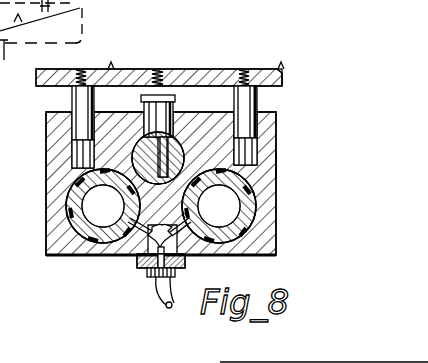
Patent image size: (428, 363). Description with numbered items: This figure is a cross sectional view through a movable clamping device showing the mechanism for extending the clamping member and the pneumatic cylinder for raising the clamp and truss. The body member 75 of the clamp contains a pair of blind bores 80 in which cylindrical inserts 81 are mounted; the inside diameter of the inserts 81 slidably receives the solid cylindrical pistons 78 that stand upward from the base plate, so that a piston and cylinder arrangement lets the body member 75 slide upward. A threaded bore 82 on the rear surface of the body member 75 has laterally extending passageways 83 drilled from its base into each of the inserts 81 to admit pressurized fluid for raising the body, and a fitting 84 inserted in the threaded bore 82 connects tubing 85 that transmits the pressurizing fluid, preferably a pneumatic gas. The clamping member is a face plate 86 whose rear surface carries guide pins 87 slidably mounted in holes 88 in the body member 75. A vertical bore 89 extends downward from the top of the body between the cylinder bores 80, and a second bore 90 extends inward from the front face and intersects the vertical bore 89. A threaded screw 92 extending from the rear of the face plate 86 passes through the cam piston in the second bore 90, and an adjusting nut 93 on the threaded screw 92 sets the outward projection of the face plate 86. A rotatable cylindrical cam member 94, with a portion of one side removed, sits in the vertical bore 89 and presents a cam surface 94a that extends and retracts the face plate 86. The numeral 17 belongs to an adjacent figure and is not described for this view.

The adjacent figure element 17 is at (35, 350).
The body member 75 is at (278, 179).
The solid cylindrical pistons 78 is at (93, 212).
The blind bores 80 is at (78, 182).
The cylindrical inserts 81 is at (93, 198).
The threaded bore 82 is at (150, 251).
The laterally extending passageways 83 is at (130, 234).
The fitting 84 is at (138, 268).
The tubing 85 is at (172, 308).
The face plate 86 is at (241, 68).
The guide pins 87 is at (72, 97).
The holes 88 is at (72, 155).
The vertical bore 89 is at (251, 57).
The second bore 90 is at (178, 150).
The threaded screw 92 is at (158, 68).
The adjusting nut 93 is at (173, 93).
The rotatable cylindrical cam member 94 is at (137, 112).
The cam surface 94a is at (283, 72).